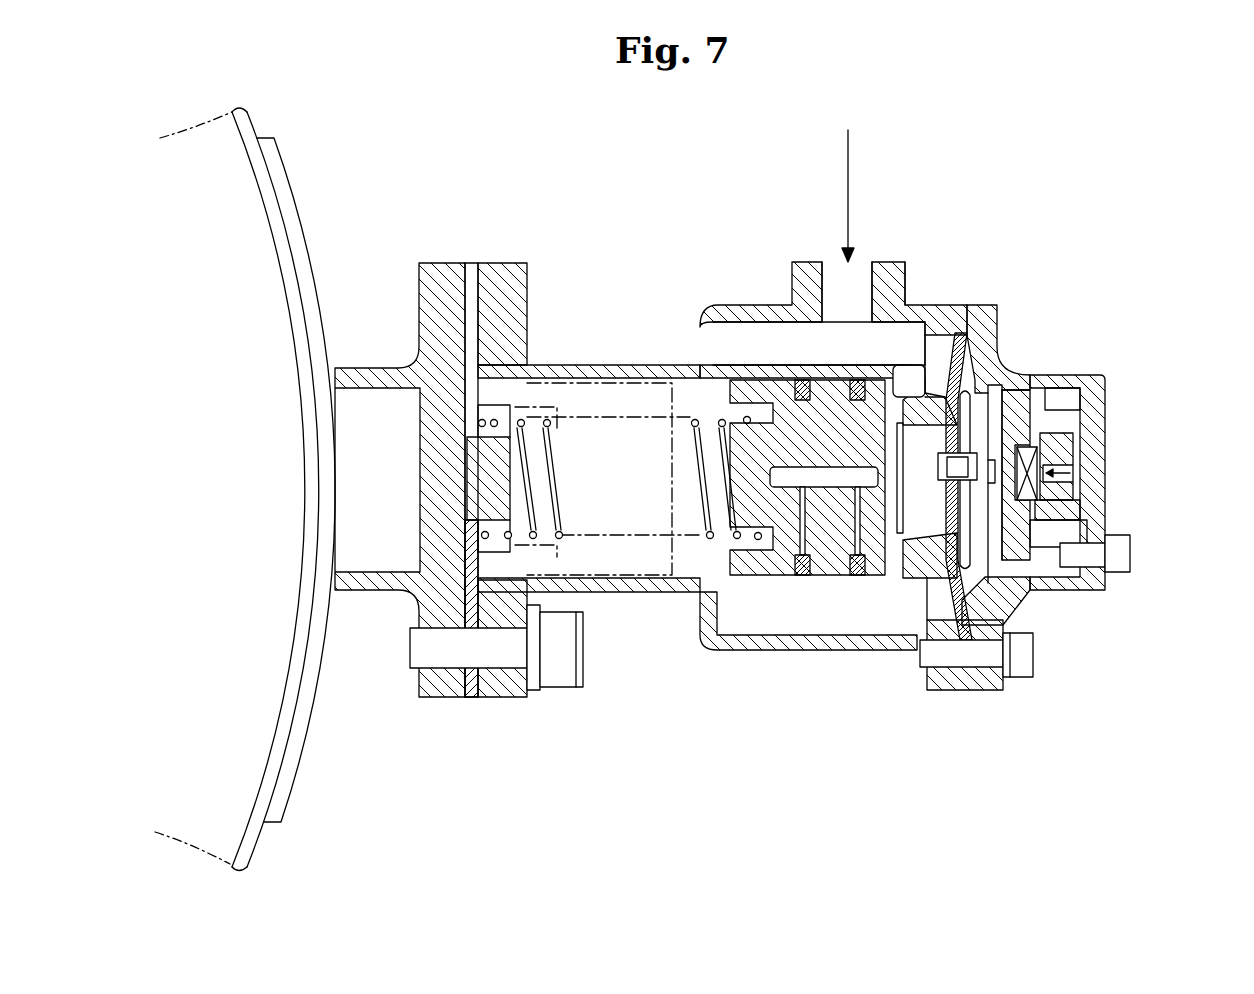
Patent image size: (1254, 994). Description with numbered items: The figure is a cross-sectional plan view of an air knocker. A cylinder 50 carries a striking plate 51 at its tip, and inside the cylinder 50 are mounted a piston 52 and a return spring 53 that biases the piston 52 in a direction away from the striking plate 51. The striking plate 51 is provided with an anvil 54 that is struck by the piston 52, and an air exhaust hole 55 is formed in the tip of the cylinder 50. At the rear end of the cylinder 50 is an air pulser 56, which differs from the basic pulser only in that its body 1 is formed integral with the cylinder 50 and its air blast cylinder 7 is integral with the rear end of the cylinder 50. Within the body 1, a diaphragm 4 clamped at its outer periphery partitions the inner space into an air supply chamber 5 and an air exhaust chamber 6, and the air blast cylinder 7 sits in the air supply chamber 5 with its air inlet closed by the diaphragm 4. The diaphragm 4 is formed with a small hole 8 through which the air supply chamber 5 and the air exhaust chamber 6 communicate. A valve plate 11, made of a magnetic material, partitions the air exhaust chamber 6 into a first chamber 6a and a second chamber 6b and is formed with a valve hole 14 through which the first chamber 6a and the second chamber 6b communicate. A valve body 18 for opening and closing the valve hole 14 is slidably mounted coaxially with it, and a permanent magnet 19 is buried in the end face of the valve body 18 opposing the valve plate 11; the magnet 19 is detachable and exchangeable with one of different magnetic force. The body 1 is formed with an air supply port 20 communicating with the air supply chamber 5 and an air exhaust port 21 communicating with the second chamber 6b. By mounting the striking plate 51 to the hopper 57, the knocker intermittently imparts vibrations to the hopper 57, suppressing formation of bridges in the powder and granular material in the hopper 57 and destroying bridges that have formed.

The body 1 is at (760, 310).
The diaphragm 4 is at (930, 585).
The air supply chamber 5 is at (880, 333).
The air exhaust chamber 6 is at (975, 370).
The first chamber 6a is at (972, 582).
The second chamber 6b is at (1060, 528).
The air blast cylinder 7 is at (937, 405).
The small hole 8 is at (950, 592).
The valve plate 11 is at (1020, 420).
The valve hole 14 is at (1067, 453).
The valve body 18 is at (1063, 493).
The permanent magnet 19 is at (1035, 477).
The air supply port 20 is at (838, 270).
The air exhaust port 21 is at (1060, 380).
The cylinder 50 is at (598, 375).
The striking plate 51 is at (432, 272).
The piston 52 is at (757, 385).
The return spring 53 is at (698, 415).
The anvil 54 is at (493, 450).
The air exhaust hole 55 is at (472, 272).
The air pulser 56 is at (908, 253).
The hopper 57 is at (250, 125).